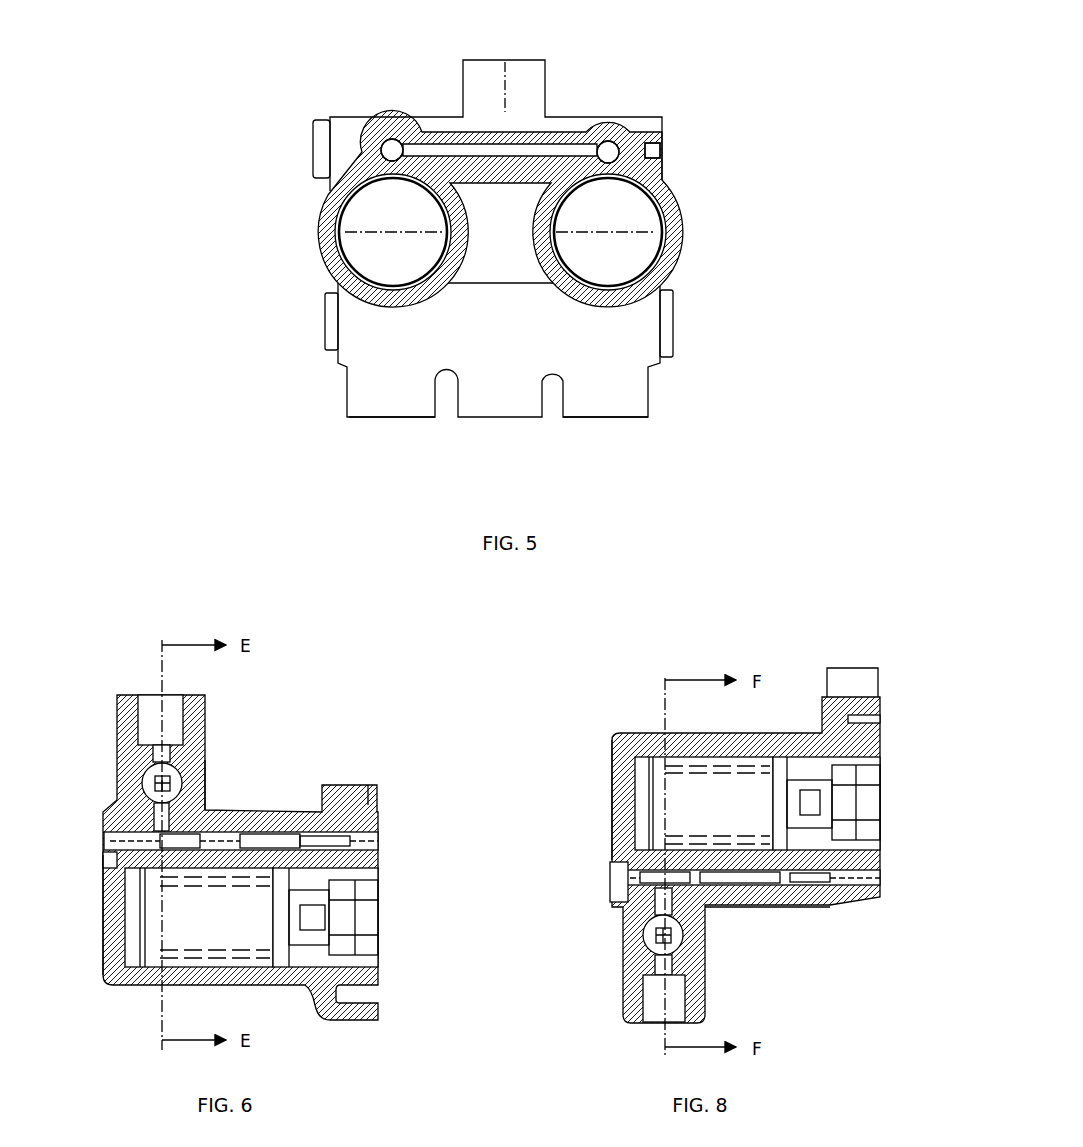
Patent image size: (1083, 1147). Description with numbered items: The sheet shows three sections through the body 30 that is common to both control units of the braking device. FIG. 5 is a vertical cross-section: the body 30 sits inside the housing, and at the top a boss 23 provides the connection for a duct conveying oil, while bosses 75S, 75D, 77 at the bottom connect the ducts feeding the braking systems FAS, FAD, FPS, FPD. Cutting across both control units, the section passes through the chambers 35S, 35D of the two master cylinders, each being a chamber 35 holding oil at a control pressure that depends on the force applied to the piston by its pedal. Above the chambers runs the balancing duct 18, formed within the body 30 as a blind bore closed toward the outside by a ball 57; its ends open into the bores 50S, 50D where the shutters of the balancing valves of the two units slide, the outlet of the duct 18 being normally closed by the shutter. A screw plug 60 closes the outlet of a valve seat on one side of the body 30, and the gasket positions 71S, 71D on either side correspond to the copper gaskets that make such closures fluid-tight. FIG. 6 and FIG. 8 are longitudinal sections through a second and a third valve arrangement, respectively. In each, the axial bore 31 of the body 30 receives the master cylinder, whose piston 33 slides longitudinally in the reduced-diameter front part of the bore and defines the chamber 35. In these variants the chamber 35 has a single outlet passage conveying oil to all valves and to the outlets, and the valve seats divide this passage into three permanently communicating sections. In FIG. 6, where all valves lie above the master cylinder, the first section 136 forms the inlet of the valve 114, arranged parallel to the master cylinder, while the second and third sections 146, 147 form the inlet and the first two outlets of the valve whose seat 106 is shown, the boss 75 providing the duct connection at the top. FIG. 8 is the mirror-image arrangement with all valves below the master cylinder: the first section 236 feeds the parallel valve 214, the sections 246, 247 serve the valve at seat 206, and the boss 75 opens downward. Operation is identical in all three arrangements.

In FIG. 5, the balancing duct 18 is at (556, 146).
In FIG. 5, the boss 23 is at (487, 76).
In FIG. 6, the body 30 is at (392, 818).
In FIG. 8, the body 30 is at (628, 740).
In FIG. 6, the axial bore 31 is at (105, 905).
In FIG. 8, the axial bore 31 is at (645, 808).
In FIG. 6, the piston 33 is at (283, 958).
In FIG. 8, the piston 33 is at (795, 756).
In FIG. 6, the chamber 35 is at (192, 915).
In FIG. 8, the chamber 35 is at (703, 807).
In FIG. 5, the suction side bore 35S is at (366, 246).
In FIG. 5, the discharge side bore 35D is at (640, 222).
In FIG. 5, the suction side passage 50S is at (392, 142).
In FIG. 5, the discharge side passage 50D is at (614, 148).
In FIG. 5, the ball 57 is at (660, 150).
In FIG. 5, the screw plug 60 is at (318, 132).
In FIG. 5, the suction side tab 71S is at (328, 320).
In FIG. 5, the discharge side tab 71D is at (673, 318).
In FIG. 6, the port 75 is at (205, 722).
In FIG. 8, the port 75 is at (628, 1012).
In FIG. 5, the boss 75S is at (403, 398).
In FIG. 5, the boss 75D is at (632, 398).
In FIG. 5, the boss 77 is at (512, 398).
In FIG. 6, the boss 106 is at (205, 778).
In FIG. 6, the valve 114 is at (225, 812).
In FIG. 6, the first section 136 is at (105, 872).
In FIG. 6, the second section 146 is at (150, 790).
In FIG. 6, the third section 147 is at (160, 758).
In FIG. 8, the adjusting screw 206 is at (648, 940).
In FIG. 8, the valve 214 is at (722, 905).
In FIG. 8, the first section 236 is at (612, 850).
In FIG. 8, the second section 246 is at (615, 910).
In FIG. 8, the third section 247 is at (706, 957).